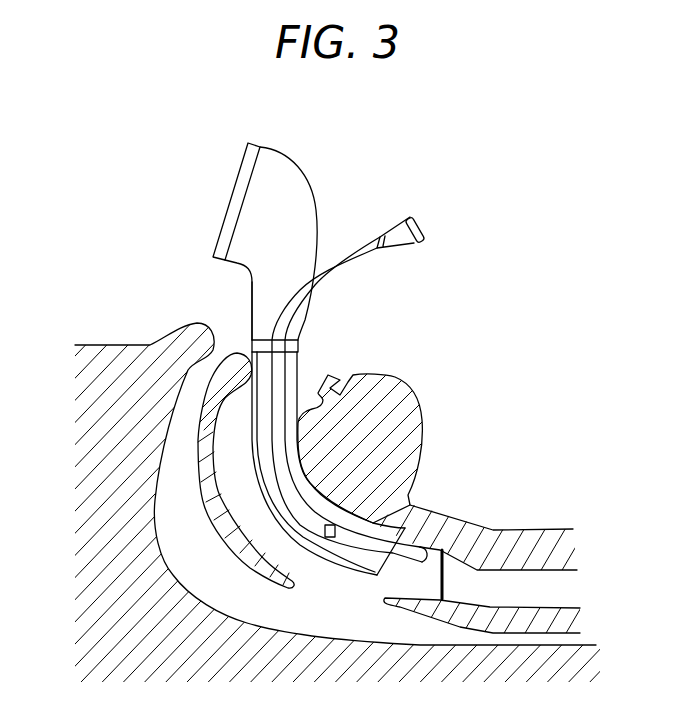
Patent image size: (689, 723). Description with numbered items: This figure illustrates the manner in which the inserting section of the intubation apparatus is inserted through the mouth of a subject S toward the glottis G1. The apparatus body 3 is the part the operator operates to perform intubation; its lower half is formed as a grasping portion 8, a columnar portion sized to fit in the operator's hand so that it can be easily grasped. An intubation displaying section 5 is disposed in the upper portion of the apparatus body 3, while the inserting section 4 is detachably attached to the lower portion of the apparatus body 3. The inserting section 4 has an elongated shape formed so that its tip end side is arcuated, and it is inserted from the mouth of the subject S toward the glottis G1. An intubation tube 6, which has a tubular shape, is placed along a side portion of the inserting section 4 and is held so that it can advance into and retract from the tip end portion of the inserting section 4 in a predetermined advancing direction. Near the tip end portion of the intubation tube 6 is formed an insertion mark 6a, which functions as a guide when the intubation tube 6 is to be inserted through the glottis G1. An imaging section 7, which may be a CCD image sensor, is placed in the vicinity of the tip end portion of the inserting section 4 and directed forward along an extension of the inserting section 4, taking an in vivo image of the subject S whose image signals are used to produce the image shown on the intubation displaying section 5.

The apparatus body 3 is at (310, 178).
The inserting section 4 is at (300, 357).
The intubation displaying section 5 is at (231, 197).
The intubation tube 6 is at (358, 260).
The insertion mark 6a is at (328, 542).
The imaging section 7 is at (405, 525).
The grasping portion 8 is at (251, 316).
The subject S is at (424, 412).
The glottis G1 is at (445, 568).